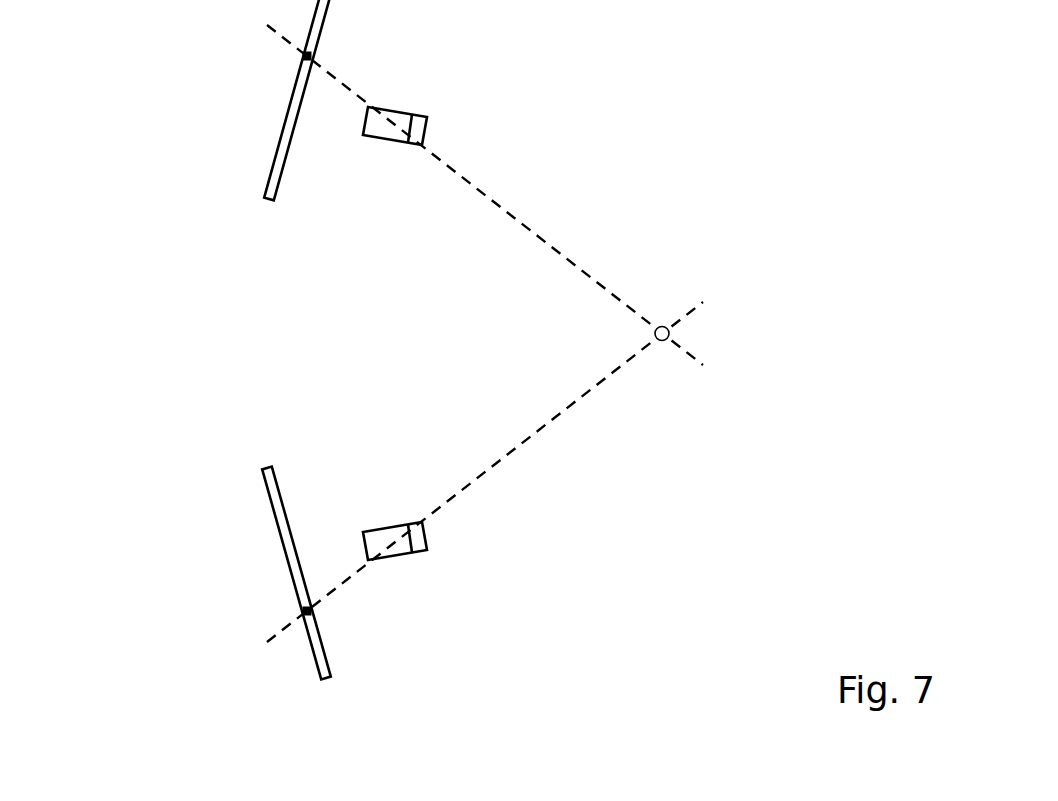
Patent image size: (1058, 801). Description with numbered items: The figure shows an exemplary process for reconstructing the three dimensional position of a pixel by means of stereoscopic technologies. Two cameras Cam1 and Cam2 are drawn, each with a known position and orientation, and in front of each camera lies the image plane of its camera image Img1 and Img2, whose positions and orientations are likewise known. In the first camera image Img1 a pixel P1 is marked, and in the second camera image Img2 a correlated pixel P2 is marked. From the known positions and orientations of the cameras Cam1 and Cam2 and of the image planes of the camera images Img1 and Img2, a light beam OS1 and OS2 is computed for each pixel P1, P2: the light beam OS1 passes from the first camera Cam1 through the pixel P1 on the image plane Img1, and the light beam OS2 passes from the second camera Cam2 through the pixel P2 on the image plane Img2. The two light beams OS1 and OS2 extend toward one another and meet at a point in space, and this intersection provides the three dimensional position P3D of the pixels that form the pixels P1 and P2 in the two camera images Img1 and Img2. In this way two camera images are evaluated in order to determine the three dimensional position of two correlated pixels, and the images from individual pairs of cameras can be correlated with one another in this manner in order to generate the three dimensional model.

The pixel P1 is at (306, 58).
The pixel P2 is at (306, 608).
The camera image Img1 is at (268, 178).
The camera image Img2 is at (273, 512).
The camera Cam1 is at (390, 138).
The camera Cam2 is at (390, 525).
The three dimensional position P3D is at (665, 327).
The light beam OS1 is at (703, 363).
The light beam OS2 is at (687, 315).